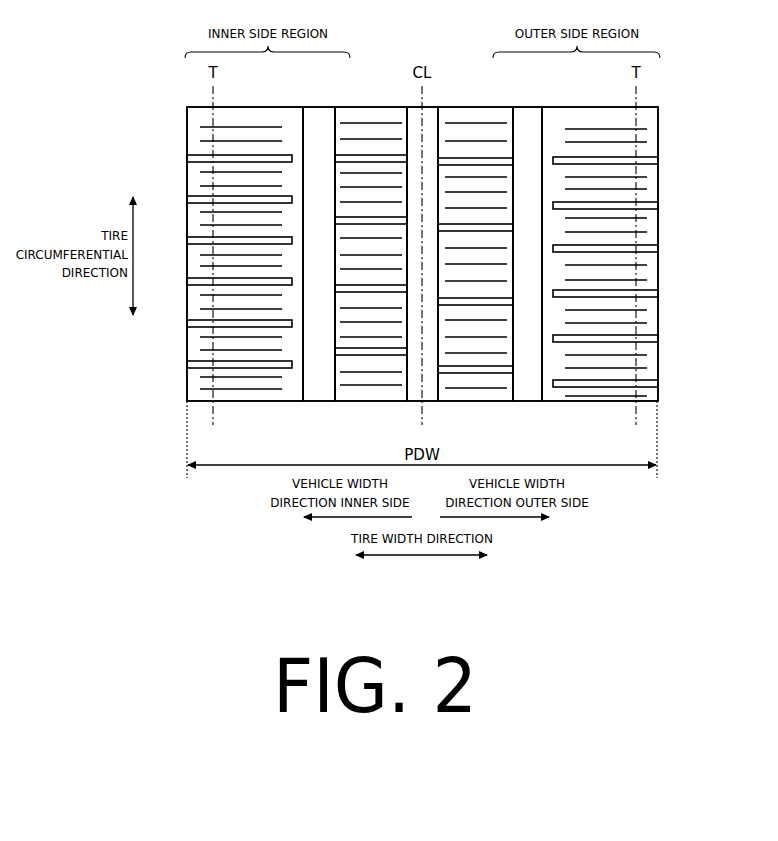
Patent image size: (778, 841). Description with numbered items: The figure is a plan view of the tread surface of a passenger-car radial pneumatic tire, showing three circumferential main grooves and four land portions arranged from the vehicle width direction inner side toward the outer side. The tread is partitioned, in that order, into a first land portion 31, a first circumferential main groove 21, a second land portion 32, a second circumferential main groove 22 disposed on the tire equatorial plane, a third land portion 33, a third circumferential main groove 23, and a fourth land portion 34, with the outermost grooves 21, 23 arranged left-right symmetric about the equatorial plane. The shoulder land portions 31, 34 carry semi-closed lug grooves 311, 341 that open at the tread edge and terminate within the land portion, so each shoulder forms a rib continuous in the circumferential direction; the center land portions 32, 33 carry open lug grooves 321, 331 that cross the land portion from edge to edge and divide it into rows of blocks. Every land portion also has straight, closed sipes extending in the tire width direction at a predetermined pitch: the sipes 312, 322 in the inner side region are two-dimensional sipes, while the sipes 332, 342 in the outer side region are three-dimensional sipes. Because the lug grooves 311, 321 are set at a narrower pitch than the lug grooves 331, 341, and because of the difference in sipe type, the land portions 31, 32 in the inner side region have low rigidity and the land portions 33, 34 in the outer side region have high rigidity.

The first circumferential main groove 21 is at (319, 110).
The second circumferential main groove 22 is at (431, 110).
The third circumferential main groove 23 is at (527, 110).
The first land portion 31 is at (266, 106).
The second land portion 32 is at (373, 106).
The third land portion 33 is at (473, 106).
The fourth land portion 34 is at (576, 106).
The lug grooves of the first land portion 311 is at (197, 158).
The sipes of the first land portion 312 is at (200, 186).
The lug grooves of the second land portion 321 is at (336, 158).
The sipes of the second land portion 322 is at (352, 202).
The lug grooves of the third land portion 331 is at (506, 161).
The sipes of the third land portion 332 is at (500, 177).
The lug grooves of the fourth land portion 341 is at (642, 160).
The sipes of the fourth land portion 342 is at (645, 189).